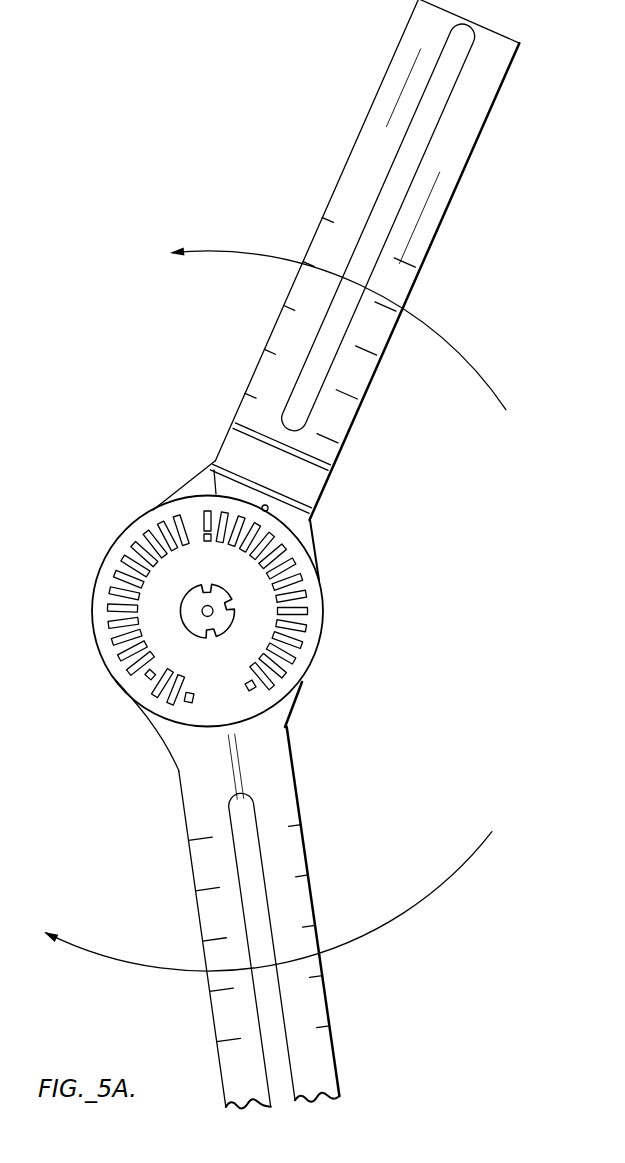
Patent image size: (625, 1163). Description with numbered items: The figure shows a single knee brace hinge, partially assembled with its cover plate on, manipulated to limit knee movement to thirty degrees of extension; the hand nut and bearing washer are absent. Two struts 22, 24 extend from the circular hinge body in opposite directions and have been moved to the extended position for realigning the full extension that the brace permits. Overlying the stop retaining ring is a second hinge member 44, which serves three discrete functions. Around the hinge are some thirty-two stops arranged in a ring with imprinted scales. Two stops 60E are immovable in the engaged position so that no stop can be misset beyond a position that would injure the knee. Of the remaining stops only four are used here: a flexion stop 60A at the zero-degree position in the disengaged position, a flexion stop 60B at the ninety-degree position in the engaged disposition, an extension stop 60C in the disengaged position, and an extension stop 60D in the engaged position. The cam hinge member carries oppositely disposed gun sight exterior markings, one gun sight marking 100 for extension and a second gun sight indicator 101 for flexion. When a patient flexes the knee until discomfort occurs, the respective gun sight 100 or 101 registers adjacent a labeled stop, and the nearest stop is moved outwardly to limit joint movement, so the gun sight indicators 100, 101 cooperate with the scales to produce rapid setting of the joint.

The strut 22 is at (298, 783).
The strut 24 is at (338, 461).
The second hinge member 44 is at (313, 557).
The flexion stop 60A is at (205, 522).
The flexion stop 60B is at (289, 612).
The extension stop 60C is at (168, 706).
The extension stop 60D is at (148, 673).
The immovable stops 60E is at (192, 698).
The gun sight marking 100 is at (130, 695).
The gun sight indicator 101 is at (267, 506).